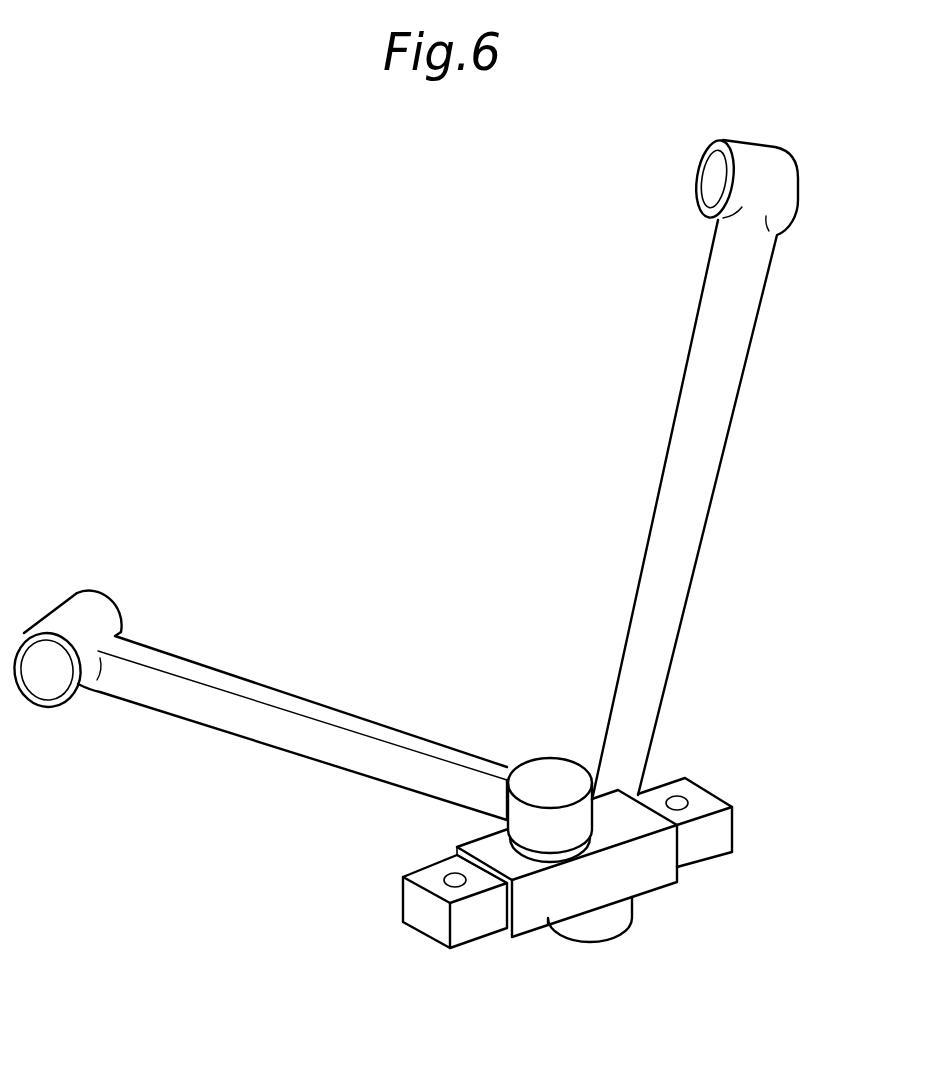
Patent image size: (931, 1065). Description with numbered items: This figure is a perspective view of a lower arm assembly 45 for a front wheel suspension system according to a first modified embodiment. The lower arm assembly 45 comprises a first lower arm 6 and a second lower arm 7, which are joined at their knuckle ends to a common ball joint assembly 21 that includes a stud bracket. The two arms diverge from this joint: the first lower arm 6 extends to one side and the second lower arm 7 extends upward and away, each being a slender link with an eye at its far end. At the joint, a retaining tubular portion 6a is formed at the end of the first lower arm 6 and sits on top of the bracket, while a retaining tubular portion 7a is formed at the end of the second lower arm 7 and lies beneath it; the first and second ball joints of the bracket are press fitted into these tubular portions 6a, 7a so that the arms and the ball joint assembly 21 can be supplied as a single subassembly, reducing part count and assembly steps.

The lower arm assembly 45 is at (238, 942).
The ball joint assembly 21 is at (415, 940).
The first lower arm 6 is at (323, 710).
The second lower arm 7 is at (707, 478).
The retaining tubular portion 6a is at (558, 765).
The retaining tubular portion 7a is at (610, 928).